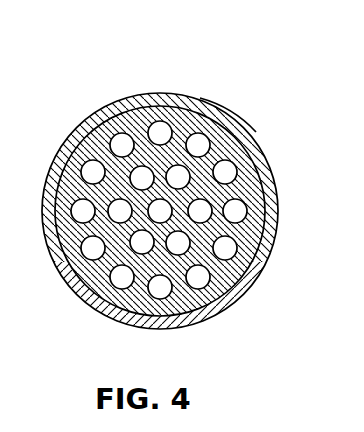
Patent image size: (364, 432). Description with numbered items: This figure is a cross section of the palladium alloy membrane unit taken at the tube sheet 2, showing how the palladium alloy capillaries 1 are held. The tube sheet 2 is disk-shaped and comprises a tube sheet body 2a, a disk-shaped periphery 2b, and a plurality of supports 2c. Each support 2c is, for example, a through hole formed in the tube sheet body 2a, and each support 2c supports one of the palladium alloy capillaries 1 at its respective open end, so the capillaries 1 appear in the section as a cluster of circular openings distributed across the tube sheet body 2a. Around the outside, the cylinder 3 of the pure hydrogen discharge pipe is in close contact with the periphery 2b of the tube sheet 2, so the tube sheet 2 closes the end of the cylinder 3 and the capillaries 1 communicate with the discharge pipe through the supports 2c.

The palladium alloy capillary 1 is at (236, 165).
The tube sheet 2 is at (186, 184).
The tube sheet body 2a is at (225, 138).
The periphery 2b is at (243, 290).
The support 2c is at (93, 126).
The cylinder 3 is at (168, 108).